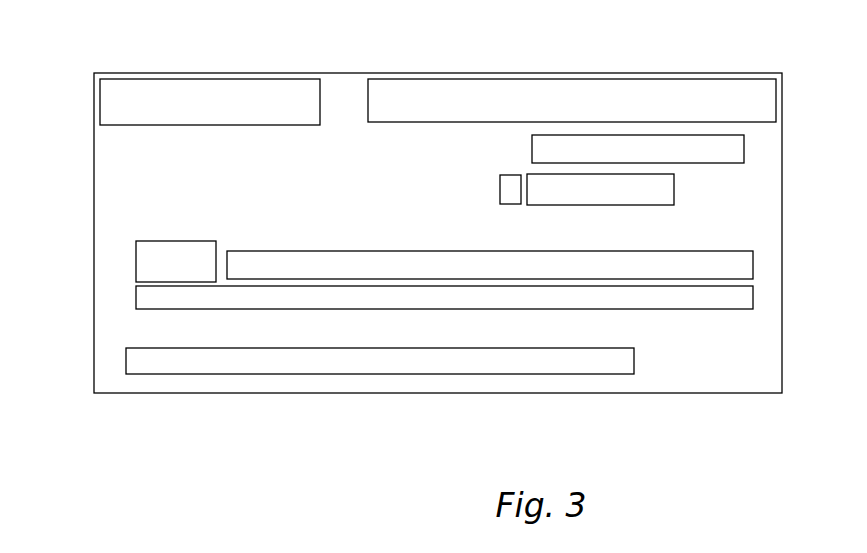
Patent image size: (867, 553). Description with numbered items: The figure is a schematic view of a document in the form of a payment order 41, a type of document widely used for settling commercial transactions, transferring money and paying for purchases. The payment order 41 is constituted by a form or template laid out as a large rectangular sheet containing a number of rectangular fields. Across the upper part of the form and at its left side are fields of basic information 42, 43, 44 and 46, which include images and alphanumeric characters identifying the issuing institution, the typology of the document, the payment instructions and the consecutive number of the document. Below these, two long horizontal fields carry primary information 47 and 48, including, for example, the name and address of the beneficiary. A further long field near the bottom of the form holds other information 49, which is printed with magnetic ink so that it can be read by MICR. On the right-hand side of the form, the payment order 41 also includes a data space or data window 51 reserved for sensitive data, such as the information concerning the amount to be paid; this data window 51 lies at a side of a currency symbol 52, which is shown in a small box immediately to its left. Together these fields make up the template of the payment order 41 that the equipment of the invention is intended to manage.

The payment order 41 is at (79, 70).
The basic information 42 is at (158, 110).
The basic information 43 is at (425, 97).
The basic information 44 is at (160, 251).
The basic information 46 is at (737, 143).
The primary information 47 is at (258, 258).
The primary information 48 is at (680, 303).
The other information 49 is at (476, 356).
The data window 51 is at (647, 200).
The currency symbol 52 is at (500, 183).